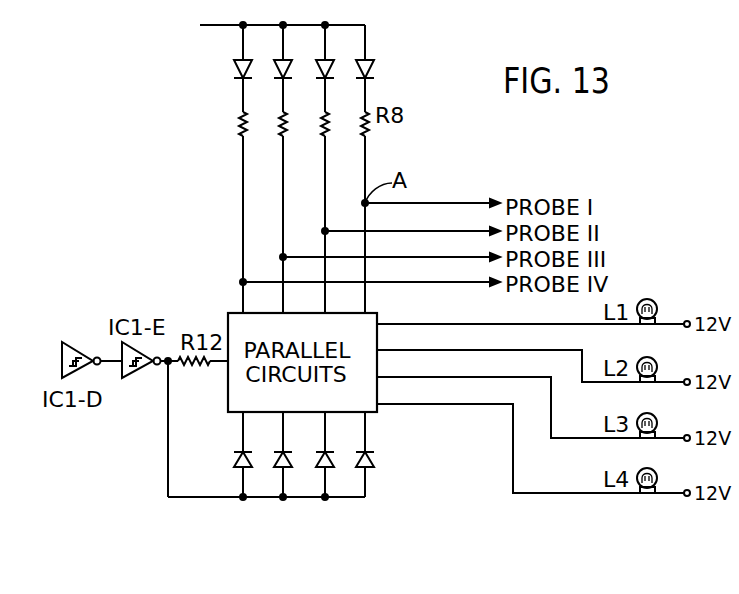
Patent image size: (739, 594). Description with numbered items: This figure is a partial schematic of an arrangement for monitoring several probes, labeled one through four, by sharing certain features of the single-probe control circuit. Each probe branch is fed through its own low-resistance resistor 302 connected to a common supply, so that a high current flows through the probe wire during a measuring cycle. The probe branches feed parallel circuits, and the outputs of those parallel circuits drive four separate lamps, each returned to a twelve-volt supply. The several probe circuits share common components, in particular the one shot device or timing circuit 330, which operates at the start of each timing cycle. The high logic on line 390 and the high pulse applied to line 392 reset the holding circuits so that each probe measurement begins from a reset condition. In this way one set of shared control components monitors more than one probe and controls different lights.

The resistor 302 is at (373, 133).
The timing circuit 330 is at (97, 322).
The line 390 is at (243, 437).
The line 392 is at (198, 498).